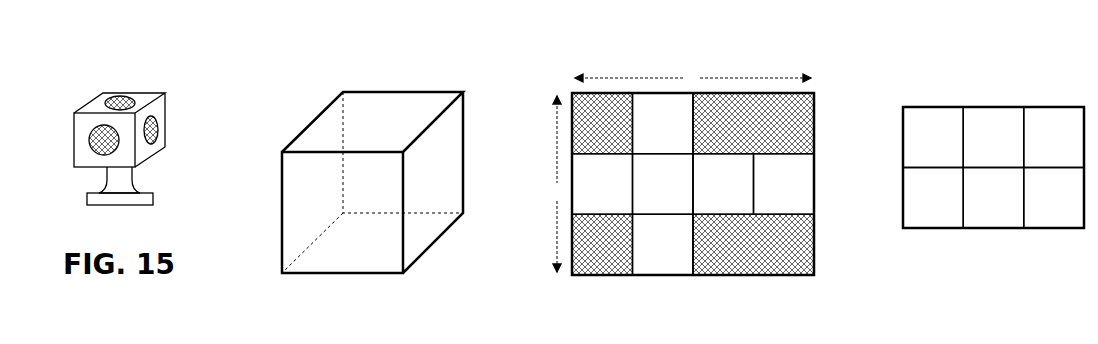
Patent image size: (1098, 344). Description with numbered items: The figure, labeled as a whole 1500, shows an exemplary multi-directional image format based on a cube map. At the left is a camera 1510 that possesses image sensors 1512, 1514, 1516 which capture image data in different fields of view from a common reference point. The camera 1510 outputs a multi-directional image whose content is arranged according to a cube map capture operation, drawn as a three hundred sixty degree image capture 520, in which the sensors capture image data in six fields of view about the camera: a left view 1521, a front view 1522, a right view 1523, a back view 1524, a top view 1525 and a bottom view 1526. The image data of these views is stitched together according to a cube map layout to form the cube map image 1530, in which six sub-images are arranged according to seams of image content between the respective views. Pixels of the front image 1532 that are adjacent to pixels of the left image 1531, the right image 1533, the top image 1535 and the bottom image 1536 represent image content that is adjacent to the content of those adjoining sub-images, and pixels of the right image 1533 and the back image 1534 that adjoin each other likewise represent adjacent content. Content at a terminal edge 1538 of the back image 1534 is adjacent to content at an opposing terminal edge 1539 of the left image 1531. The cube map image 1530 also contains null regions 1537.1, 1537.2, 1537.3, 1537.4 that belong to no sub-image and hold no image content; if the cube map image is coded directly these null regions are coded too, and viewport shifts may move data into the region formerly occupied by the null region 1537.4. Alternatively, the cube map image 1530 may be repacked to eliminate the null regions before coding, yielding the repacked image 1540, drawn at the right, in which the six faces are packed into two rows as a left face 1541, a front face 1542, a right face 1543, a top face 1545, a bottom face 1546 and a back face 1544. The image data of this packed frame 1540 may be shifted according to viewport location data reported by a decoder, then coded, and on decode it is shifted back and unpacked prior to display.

The cube map processing system 1500 is at (99, 297).
The camera 1510 is at (106, 176).
The image sensor 1512 is at (88, 139).
The image sensor 1514 is at (158, 130).
The image sensor 1516 is at (123, 92).
The 360 degree image capture 520 is at (450, 320).
The left view 1521 is at (272, 167).
The front view 1522 is at (463, 213).
The right view 1523 is at (415, 199).
The back view 1524 is at (403, 89).
The top view 1525 is at (406, 129).
The bottom view 1526 is at (327, 283).
The cube map image 1530 is at (778, 298).
The left image 1531 is at (584, 201).
The front image 1532 is at (645, 201).
The right image 1533 is at (705, 201).
The back image 1534 is at (766, 201).
The top image 1535 is at (645, 140).
The bottom image 1536 is at (645, 261).
The null region 1537.1 is at (754, 131).
The null region 1537.2 is at (754, 252).
The null region 1537.3 is at (578, 252).
The null region 1537.4 is at (578, 131).
The terminal edge of the back image 1538 is at (816, 186).
The opposing terminal edge of the left image 1539 is at (571, 186).
The repacked image 1540 is at (1040, 277).
The repacked left face image 1541 is at (915, 155).
The repacked front face image 1542 is at (1012, 155).
The repacked right face image 1543 is at (1036, 155).
The repacked back face image 1544 is at (1036, 216).
The repacked top face image 1545 is at (915, 216).
The repacked bottom face image 1546 is at (1012, 216).